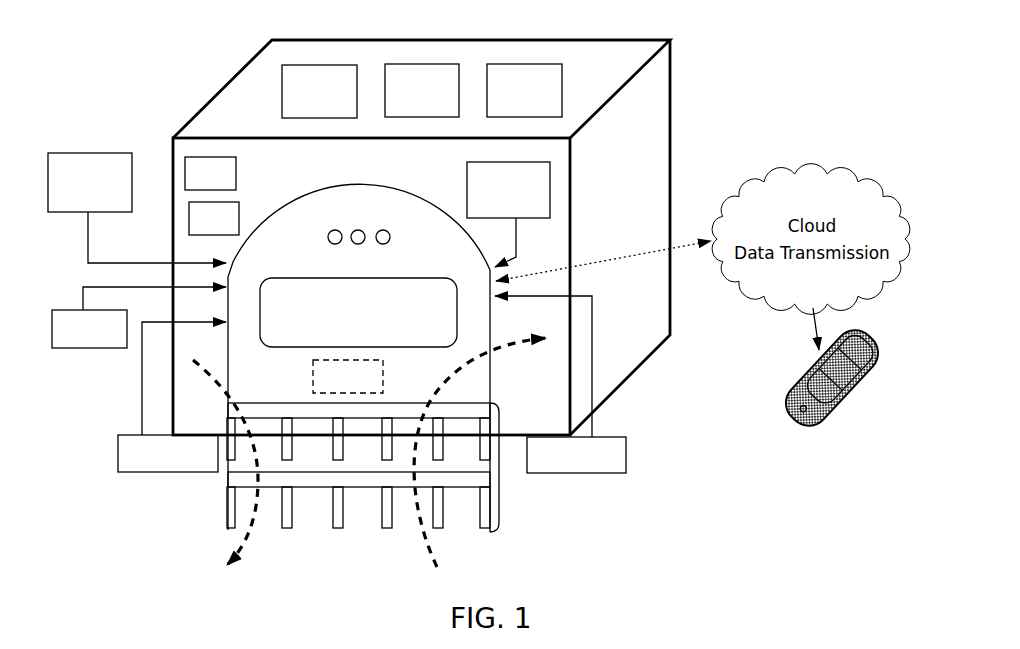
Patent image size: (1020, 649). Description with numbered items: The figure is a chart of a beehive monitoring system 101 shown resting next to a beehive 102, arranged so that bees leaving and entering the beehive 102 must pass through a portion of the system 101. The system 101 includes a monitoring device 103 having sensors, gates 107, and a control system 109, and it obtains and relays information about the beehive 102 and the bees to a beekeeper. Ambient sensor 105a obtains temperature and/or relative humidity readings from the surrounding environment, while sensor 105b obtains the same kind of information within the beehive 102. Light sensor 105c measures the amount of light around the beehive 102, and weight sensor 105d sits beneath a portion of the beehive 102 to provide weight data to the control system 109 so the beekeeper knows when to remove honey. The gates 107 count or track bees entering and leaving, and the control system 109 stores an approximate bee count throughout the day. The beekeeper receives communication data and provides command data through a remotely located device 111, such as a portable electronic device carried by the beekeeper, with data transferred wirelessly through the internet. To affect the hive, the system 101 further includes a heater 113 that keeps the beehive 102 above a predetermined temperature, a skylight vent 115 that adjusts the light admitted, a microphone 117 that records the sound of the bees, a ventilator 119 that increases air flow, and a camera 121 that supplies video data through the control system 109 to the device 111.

The beehive monitoring system 101 is at (116, 557).
The beehive 102 is at (323, 38).
The monitoring device 103 is at (440, 263).
The ambient sensor 105a is at (128, 185).
The ambient sensor 105b is at (550, 188).
The light sensor 105c is at (72, 348).
The weight sensor 105d is at (160, 472).
The gates 107 is at (502, 467).
The control system 109 is at (368, 387).
The device 111 is at (790, 413).
The heater 113 is at (355, 181).
The skylight vent 115 is at (384, 181).
The microphone 117 is at (402, 186).
The ventilator 119 is at (282, 201).
The camera 121 is at (262, 217).